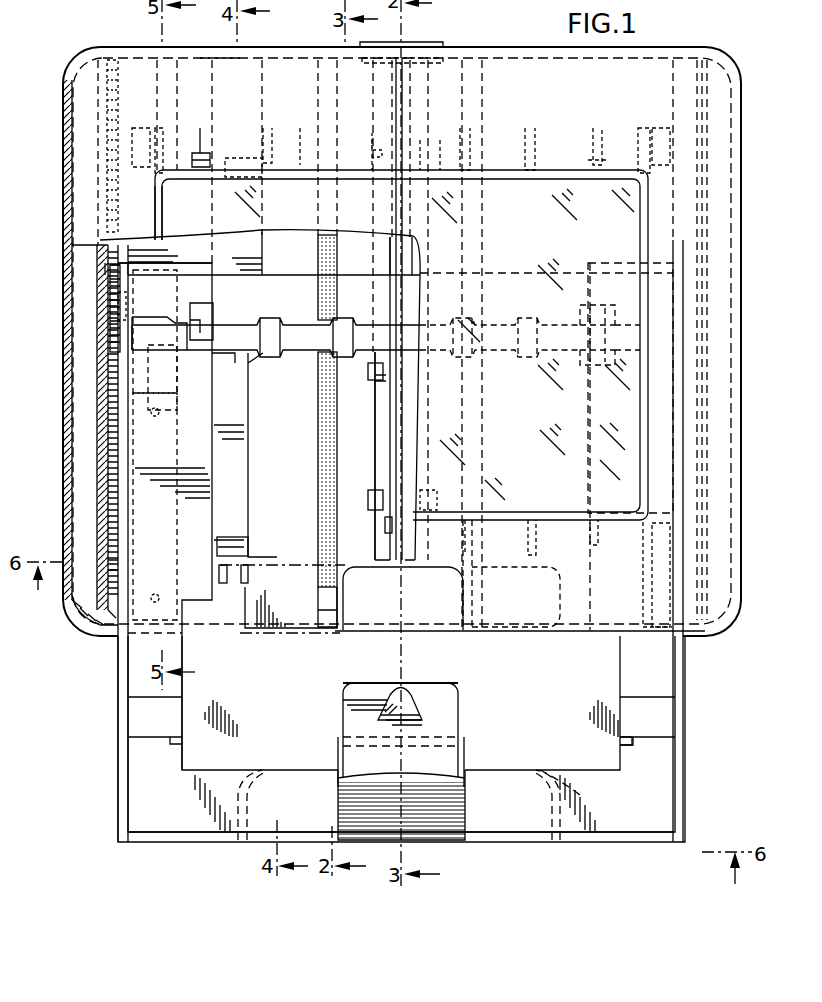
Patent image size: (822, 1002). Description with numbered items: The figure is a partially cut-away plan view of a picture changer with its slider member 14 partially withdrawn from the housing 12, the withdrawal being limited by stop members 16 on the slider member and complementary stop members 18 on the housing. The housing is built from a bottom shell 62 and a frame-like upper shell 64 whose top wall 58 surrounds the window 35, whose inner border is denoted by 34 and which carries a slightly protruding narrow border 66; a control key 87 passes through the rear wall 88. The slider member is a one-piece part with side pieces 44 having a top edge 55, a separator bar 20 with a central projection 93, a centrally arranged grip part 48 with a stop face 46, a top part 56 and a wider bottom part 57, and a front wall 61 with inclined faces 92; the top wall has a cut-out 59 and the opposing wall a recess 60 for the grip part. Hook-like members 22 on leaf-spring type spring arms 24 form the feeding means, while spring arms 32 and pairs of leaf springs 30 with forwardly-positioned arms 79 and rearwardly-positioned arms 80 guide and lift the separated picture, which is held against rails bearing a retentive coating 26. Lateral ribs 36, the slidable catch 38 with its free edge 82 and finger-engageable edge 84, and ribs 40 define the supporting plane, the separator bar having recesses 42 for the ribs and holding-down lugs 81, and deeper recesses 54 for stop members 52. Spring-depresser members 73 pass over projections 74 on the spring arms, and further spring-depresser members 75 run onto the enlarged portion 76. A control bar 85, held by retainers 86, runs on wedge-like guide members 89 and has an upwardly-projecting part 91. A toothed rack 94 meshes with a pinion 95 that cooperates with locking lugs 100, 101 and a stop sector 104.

The housing 12 is at (92, 45).
The slider member 14 is at (120, 745).
The stop members 16 is at (110, 267).
The complementary stop members 18 is at (100, 620).
The separator bar 20 is at (305, 280).
The hook-like members 22 is at (245, 548).
The spring arms 24 is at (245, 480).
The retentive coating 26 is at (320, 422).
The leaf springs 30 is at (135, 433).
The spring arms 32 is at (218, 238).
The inner border of viewing window 34 is at (552, 180).
The window 35 is at (586, 388).
The lateral ribs 36 is at (165, 128).
The slidable catch 38 is at (445, 690).
The ribs 40 is at (530, 145).
The recesses 42 is at (267, 338).
The side pieces 44 is at (124, 668).
The stop face 46 is at (343, 737).
The grip part 48 is at (430, 776).
The stop members 52 is at (598, 165).
The recesses 54 is at (204, 305).
The top edge 55 is at (124, 704).
The top part 56 is at (352, 815).
The bottom part 57 is at (598, 798).
The top wall 58 is at (533, 70).
The cut-out 59 is at (456, 632).
The recess 60 is at (505, 572).
The front wall 61 is at (178, 842).
The bottom shell 62 is at (68, 440).
The upper shell 64 is at (212, 58).
The border 66 is at (648, 472).
The spring-depresser members 73 is at (243, 355).
The projections 74 is at (215, 152).
The spring-depresser members 75 is at (193, 640).
The enlarged portion 76 is at (200, 520).
The forwardly-positioned arms 79 is at (180, 452).
The rearwardly-positioned arms 80 is at (150, 242).
The holding-down lugs 81 is at (598, 565).
The free edge 82 is at (355, 684).
The finger-engageable edge 84 is at (412, 708).
The control bar 85 is at (380, 255).
The retainers 86 is at (368, 150).
The control key 87 is at (405, 42).
The rear wall 88 is at (256, 47).
The wedge-like guide members 89 is at (385, 525).
The upwardly-projecting part 91 is at (386, 568).
The inclined faces 92 is at (630, 712).
The projection 93 is at (378, 332).
The toothed rack 94 is at (104, 520).
The pinion 95 is at (130, 336).
The locking lug 100 is at (112, 328).
The locking lug 101 is at (108, 276).
The stop sector 104 is at (108, 565).